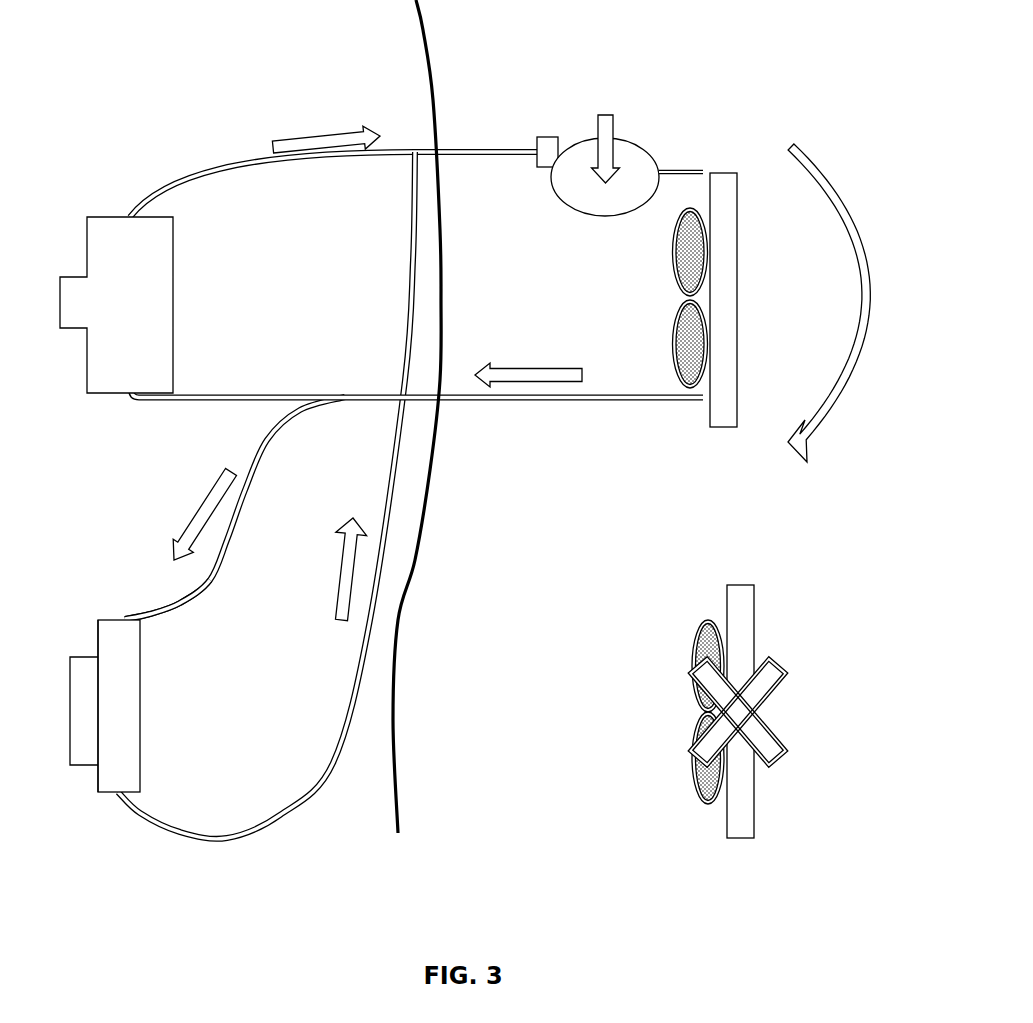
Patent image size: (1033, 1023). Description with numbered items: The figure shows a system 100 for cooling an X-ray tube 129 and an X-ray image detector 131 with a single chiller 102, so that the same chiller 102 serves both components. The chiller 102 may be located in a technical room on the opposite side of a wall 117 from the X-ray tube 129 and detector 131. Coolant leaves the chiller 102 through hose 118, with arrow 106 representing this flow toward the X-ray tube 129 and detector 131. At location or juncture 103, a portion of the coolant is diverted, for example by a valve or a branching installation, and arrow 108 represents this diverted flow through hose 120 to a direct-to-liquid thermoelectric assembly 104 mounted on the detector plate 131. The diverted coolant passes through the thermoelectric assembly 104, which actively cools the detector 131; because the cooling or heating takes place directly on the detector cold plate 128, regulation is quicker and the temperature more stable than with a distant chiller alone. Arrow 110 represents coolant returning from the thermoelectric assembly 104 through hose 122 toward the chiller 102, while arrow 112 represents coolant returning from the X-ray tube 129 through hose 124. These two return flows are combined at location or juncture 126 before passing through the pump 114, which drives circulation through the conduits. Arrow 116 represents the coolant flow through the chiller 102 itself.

The system 100 is at (124, 44).
The chiller 102 is at (690, 398).
The location or juncture 103 is at (348, 401).
The DL thermoelectric assembly 104 is at (87, 768).
The arrow 106 is at (537, 365).
The arrow 108 is at (198, 507).
The arrow 110 is at (337, 590).
The arrow 112 is at (320, 135).
The pump 114 is at (647, 143).
The arrow 116 is at (846, 177).
The wall 117 is at (398, 758).
The hose 118 is at (455, 401).
The hose 120 is at (183, 600).
The hose 122 is at (227, 842).
The hose 124 is at (182, 182).
The location or juncture 126 is at (415, 149).
The cold plate 128 is at (97, 640).
The X-ray tube 129 is at (174, 305).
The X-ray image detector 131 is at (141, 700).